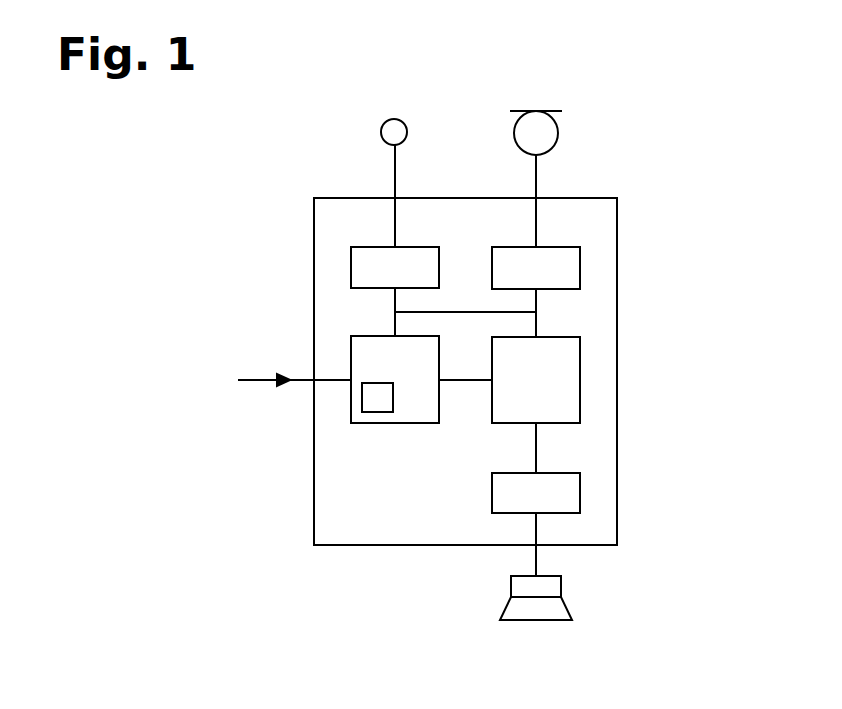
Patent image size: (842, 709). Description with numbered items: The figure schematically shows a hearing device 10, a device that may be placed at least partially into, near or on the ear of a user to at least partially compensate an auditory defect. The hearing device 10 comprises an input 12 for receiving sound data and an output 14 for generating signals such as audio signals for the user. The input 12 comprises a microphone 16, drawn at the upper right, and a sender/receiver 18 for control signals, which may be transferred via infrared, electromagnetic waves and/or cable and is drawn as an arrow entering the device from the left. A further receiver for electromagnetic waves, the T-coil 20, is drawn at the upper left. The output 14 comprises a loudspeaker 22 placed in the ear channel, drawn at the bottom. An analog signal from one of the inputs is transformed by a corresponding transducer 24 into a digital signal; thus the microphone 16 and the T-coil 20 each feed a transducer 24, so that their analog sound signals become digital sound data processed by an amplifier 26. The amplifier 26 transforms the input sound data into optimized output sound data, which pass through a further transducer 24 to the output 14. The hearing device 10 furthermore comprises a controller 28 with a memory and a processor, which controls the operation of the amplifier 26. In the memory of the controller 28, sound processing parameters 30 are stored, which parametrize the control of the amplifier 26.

The hearing device 10 is at (590, 107).
The input 12 is at (593, 135).
The output 14 is at (595, 592).
The microphone 16 is at (536, 170).
The sender/receiver 18 is at (249, 378).
The T-coil 20 is at (395, 170).
The loudspeaker 22 is at (503, 610).
The transducer 24 is at (351, 270).
The amplifier 26 is at (580, 383).
The controller 28 is at (411, 423).
The sound processing parameters 30 is at (374, 412).